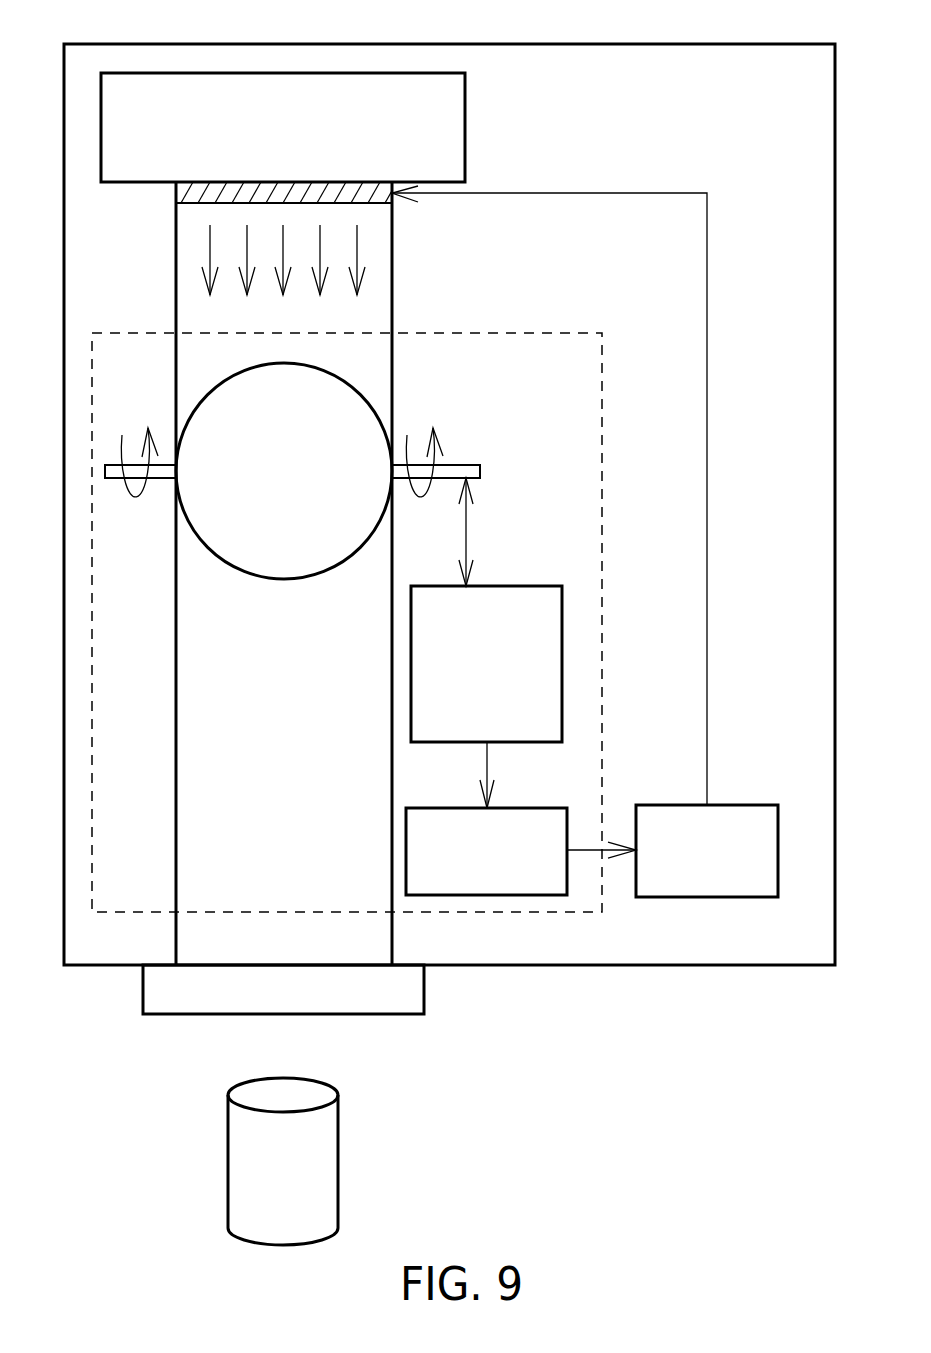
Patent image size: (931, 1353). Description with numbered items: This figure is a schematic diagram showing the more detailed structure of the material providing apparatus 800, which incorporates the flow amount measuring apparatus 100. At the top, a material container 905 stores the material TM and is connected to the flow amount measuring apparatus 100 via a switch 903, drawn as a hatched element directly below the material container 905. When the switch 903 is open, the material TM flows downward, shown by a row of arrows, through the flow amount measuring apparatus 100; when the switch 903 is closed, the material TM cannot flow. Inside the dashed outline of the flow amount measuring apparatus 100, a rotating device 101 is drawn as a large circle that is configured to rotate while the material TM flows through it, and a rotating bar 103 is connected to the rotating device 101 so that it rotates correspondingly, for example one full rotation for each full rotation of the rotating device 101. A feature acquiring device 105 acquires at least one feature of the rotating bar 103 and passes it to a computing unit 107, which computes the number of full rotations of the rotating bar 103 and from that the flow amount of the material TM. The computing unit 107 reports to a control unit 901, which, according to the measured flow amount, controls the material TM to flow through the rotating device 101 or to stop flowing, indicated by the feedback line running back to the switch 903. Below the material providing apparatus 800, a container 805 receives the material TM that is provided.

The material providing apparatus 800 is at (448, 44).
The material container 905 is at (465, 125).
The switch 903 is at (381, 229).
The material TM is at (208, 242).
The flow amount measuring apparatus 100 is at (449, 333).
The rotating device 101 is at (305, 485).
The rotating bar 103 is at (473, 465).
The feature acquiring device 105 is at (538, 586).
The computing unit 107 is at (503, 808).
The control unit 901 is at (720, 805).
The container 805 is at (338, 1155).